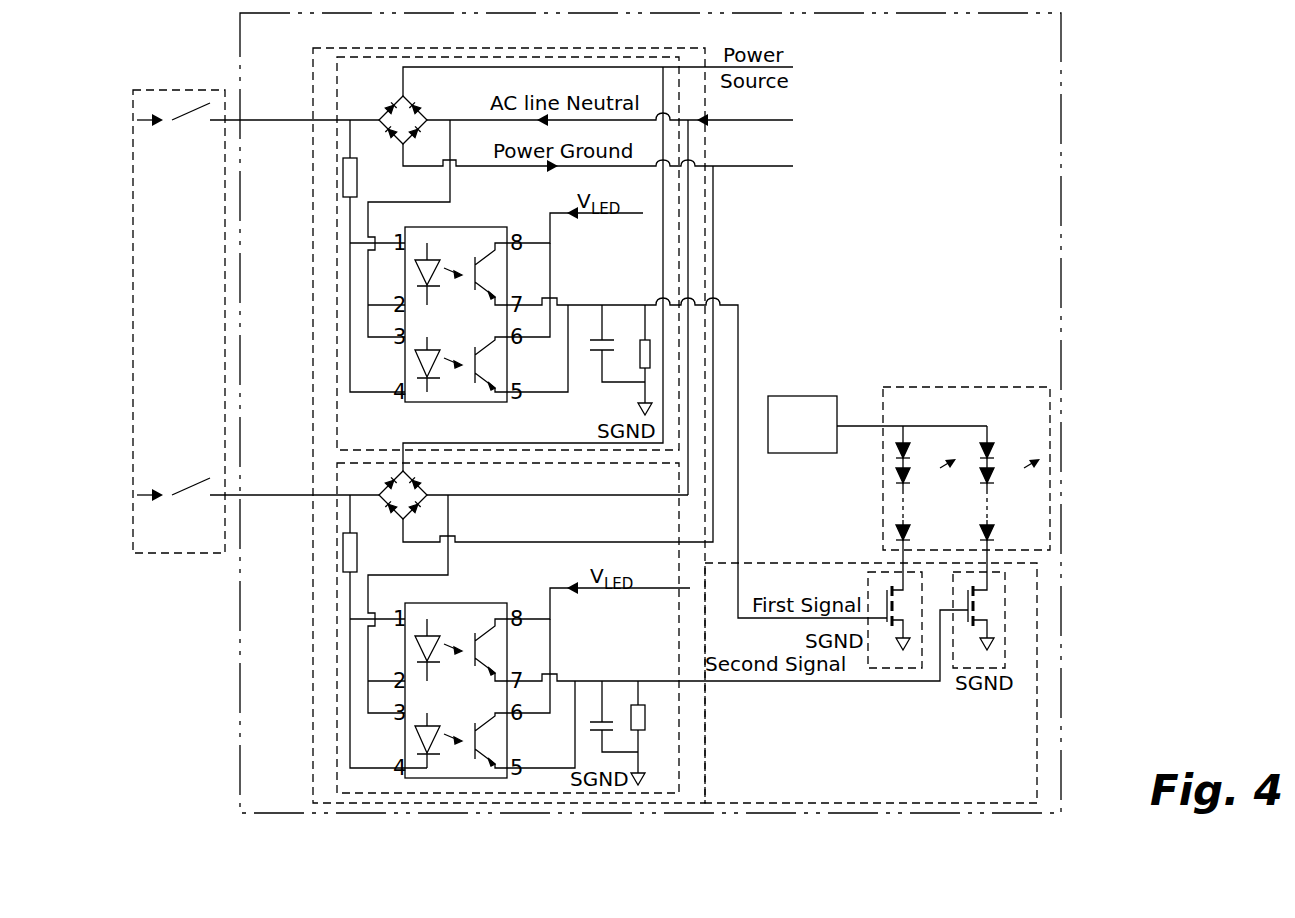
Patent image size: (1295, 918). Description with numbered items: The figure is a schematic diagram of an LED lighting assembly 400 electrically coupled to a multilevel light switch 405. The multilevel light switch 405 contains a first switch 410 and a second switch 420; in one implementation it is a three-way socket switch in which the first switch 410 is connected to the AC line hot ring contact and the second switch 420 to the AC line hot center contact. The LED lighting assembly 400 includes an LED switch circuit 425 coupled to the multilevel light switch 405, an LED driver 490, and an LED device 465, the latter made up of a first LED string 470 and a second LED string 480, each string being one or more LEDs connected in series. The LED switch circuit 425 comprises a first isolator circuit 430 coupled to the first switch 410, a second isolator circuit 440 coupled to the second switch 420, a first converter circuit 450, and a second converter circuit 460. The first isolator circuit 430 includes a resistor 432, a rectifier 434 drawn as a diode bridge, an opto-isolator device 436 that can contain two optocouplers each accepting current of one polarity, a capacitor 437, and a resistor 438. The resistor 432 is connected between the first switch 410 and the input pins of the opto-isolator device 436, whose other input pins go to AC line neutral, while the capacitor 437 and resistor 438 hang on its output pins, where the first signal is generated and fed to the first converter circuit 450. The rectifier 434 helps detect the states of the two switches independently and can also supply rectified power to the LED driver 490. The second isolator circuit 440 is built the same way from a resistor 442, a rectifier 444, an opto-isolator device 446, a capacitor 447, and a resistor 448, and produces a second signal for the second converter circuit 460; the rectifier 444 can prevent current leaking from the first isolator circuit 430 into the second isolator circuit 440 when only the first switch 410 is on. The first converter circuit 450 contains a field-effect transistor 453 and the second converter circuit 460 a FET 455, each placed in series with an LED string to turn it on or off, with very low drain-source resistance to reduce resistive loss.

The LED lighting assembly 400 is at (1097, 87).
The multilevel light switch 405 is at (133, 240).
The first switch 410 is at (170, 122).
The second switch 420 is at (170, 497).
The LED switch circuit 425 is at (1037, 712).
The first isolator circuit 430 is at (337, 283).
The resistor 432 is at (357, 180).
The rectifier 434 is at (410, 105).
The opto-isolator device 436 is at (492, 402).
The capacitor 437 is at (602, 338).
The resistor 438 is at (641, 345).
The second isolator circuit 440 is at (679, 752).
The resistor 442 is at (357, 555).
The rectifier 444 is at (427, 487).
The opto-isolator device 446 is at (467, 603).
The capacitor 447 is at (600, 720).
The resistor 448 is at (645, 718).
The first converter circuit 450 is at (895, 672).
The field-effect transistor 453 is at (886, 600).
The FET 455 is at (976, 603).
The second converter circuit 460 is at (1005, 633).
The LED device 465 is at (990, 387).
The first LED string 470 is at (900, 438).
The second LED string 480 is at (995, 447).
The LED driver 490 is at (818, 396).